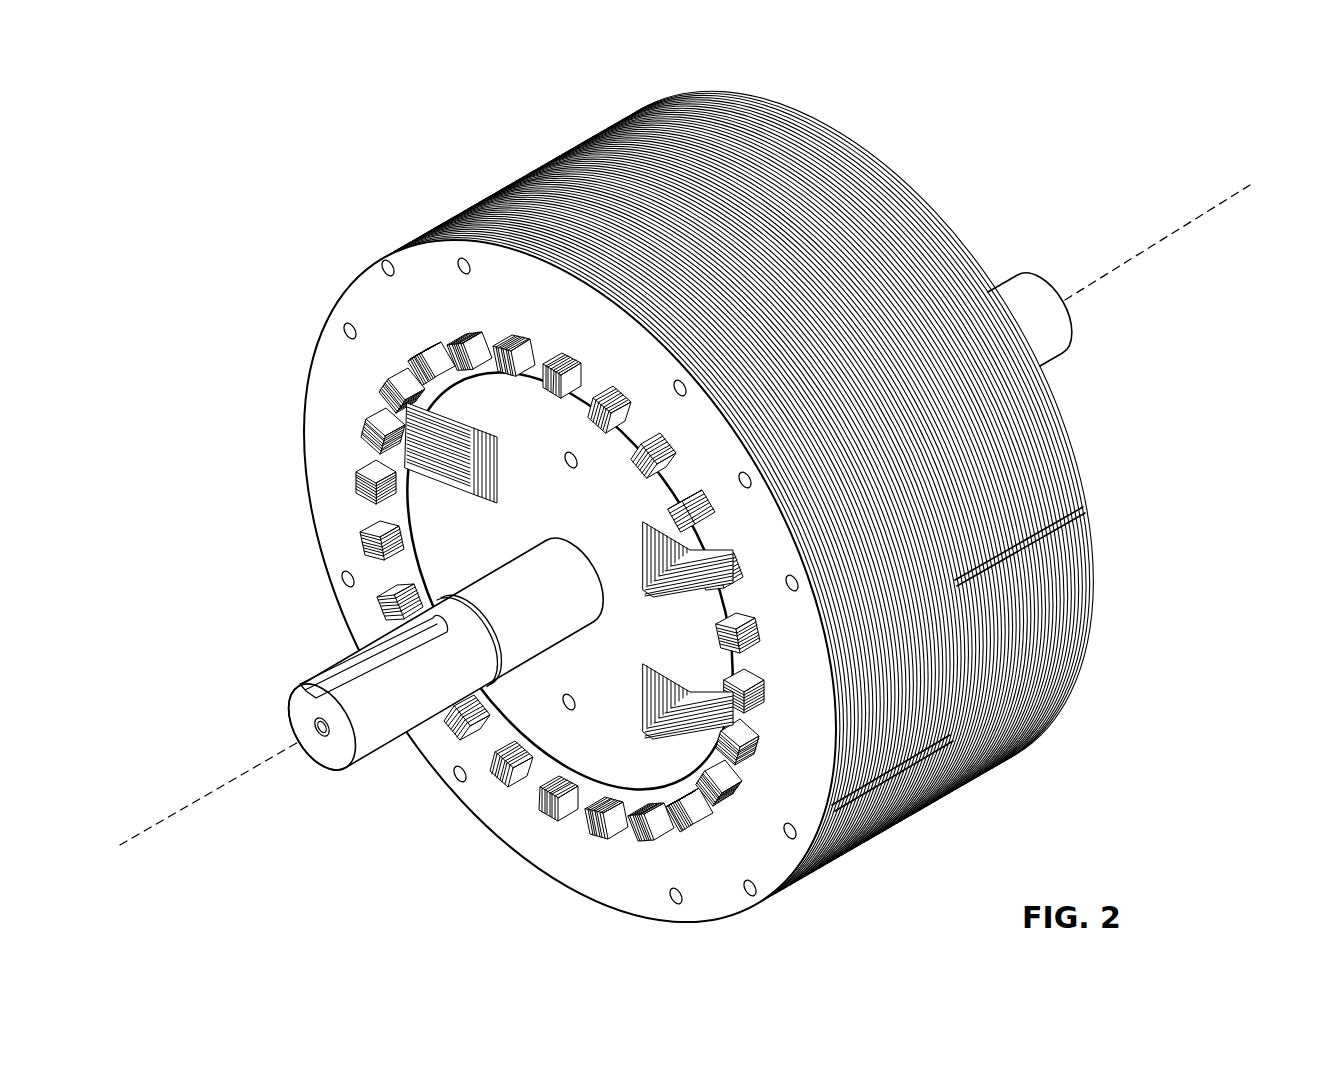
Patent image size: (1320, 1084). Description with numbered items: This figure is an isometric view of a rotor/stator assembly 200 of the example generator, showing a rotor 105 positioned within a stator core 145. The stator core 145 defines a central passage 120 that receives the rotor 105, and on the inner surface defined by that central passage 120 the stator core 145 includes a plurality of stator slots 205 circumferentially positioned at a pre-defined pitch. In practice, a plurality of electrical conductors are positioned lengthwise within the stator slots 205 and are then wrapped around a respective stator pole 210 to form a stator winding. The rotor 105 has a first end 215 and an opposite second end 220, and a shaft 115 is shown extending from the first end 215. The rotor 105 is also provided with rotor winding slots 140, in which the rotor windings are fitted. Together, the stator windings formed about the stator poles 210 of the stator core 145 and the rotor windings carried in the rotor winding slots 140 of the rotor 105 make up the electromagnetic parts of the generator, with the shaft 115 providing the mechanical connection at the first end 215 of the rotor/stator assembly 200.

The rotor 105 is at (506, 702).
The shaft 115 is at (380, 728).
The central passage 120 is at (328, 645).
The rotor winding slots 140 is at (518, 466).
The stator core 145 is at (586, 142).
The rotor/stator assembly 200 is at (258, 142).
The stator slots 205 is at (440, 343).
The stator pole 210 is at (385, 462).
The first end 215 is at (596, 765).
The second end 220 is at (1018, 236).